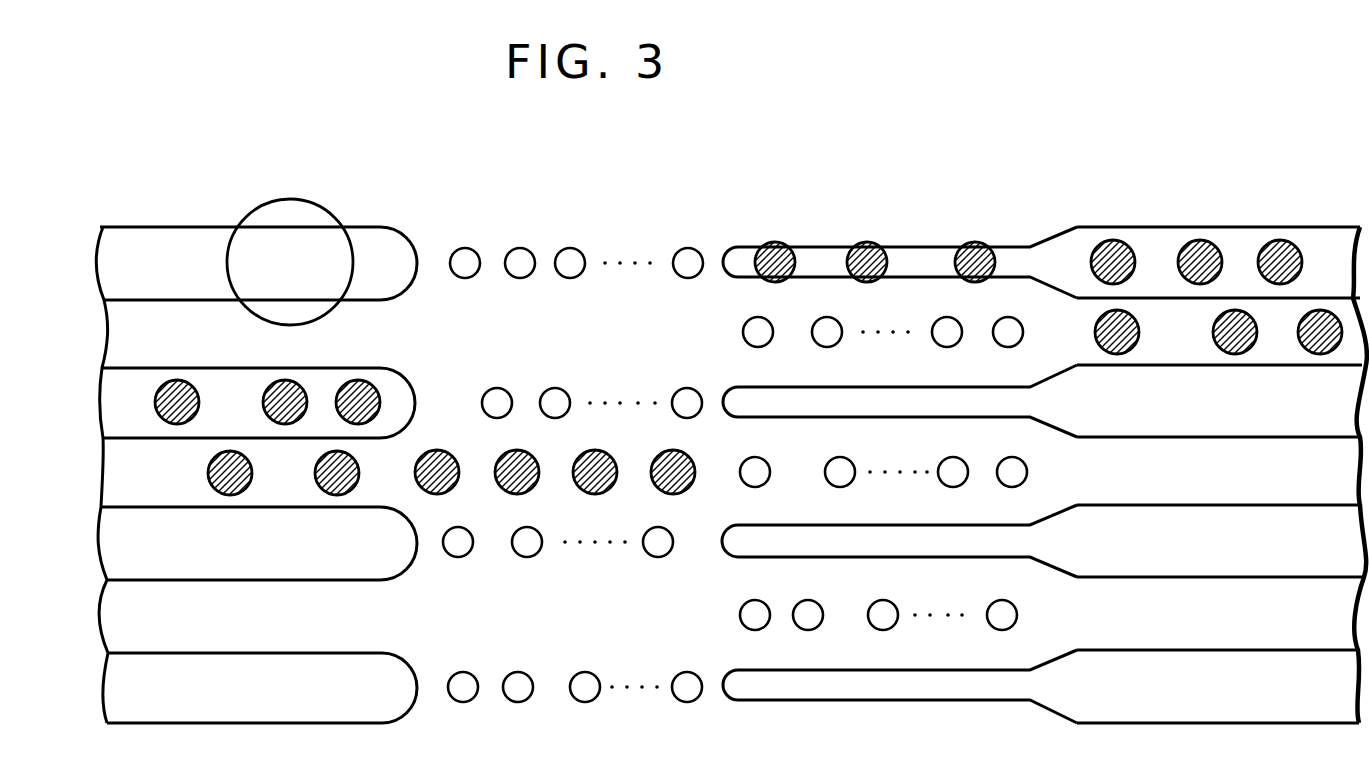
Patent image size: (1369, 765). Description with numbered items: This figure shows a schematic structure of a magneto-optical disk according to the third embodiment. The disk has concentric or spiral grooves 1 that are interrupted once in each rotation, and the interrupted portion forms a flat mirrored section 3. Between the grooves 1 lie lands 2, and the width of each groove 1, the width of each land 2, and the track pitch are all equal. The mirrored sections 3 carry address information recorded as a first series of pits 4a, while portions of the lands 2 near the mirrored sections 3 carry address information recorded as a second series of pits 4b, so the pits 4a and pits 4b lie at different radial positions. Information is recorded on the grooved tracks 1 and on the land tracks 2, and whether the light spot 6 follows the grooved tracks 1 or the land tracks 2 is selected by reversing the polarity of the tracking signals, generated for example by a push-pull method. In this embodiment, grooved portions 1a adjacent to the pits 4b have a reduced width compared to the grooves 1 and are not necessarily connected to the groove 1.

The groove 1 is at (170, 240).
The grooved portion 1a is at (920, 255).
The land 2 is at (1165, 345).
The mirrored section 3 is at (552, 230).
The pits (first series of pits) 4a is at (520, 248).
The pits (second series of pits) 4b is at (827, 317).
The light spot 6 is at (310, 200).